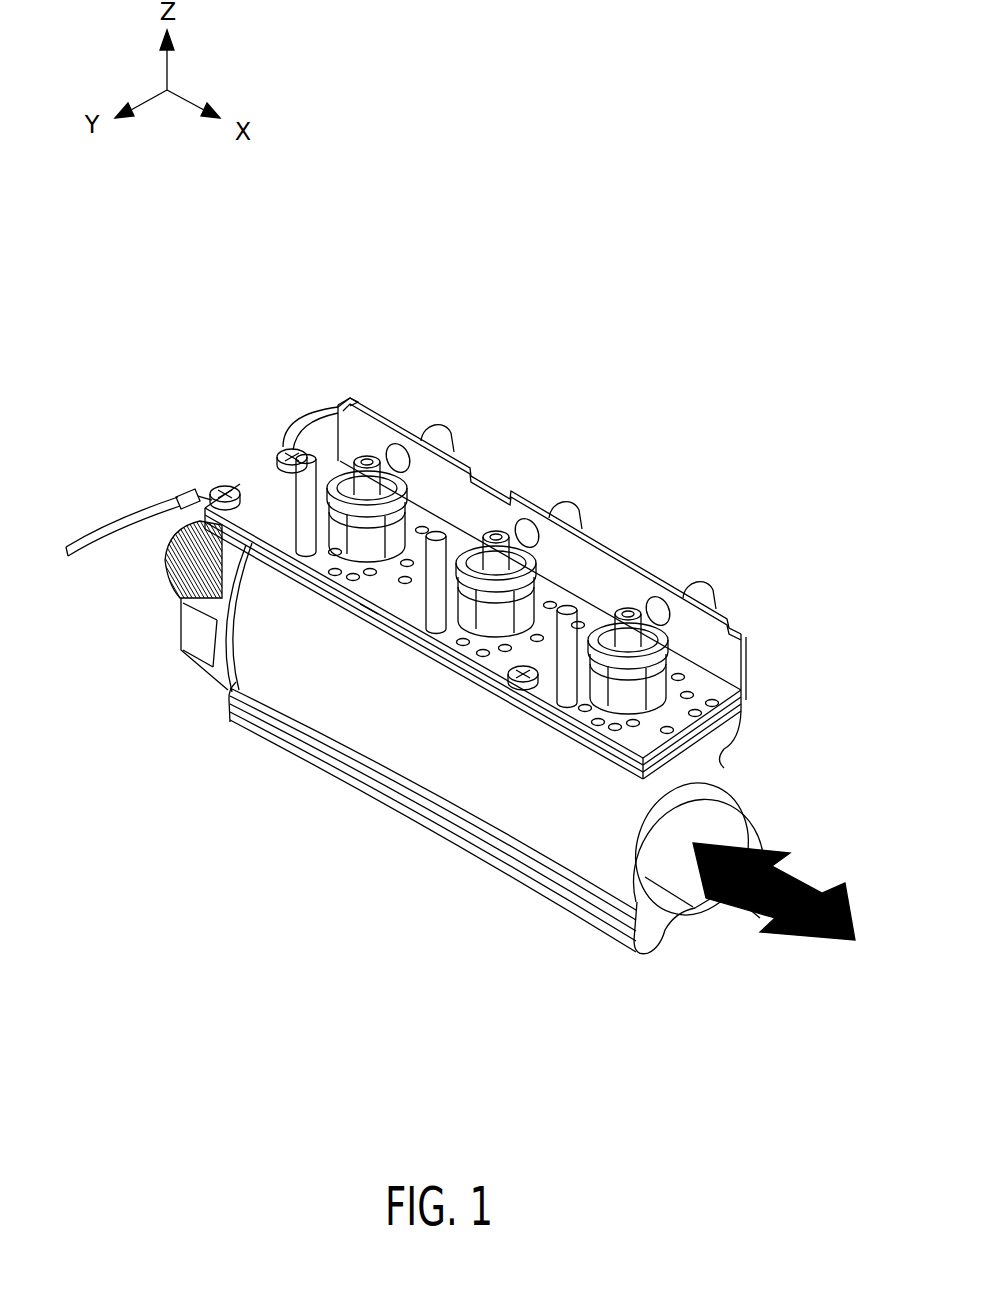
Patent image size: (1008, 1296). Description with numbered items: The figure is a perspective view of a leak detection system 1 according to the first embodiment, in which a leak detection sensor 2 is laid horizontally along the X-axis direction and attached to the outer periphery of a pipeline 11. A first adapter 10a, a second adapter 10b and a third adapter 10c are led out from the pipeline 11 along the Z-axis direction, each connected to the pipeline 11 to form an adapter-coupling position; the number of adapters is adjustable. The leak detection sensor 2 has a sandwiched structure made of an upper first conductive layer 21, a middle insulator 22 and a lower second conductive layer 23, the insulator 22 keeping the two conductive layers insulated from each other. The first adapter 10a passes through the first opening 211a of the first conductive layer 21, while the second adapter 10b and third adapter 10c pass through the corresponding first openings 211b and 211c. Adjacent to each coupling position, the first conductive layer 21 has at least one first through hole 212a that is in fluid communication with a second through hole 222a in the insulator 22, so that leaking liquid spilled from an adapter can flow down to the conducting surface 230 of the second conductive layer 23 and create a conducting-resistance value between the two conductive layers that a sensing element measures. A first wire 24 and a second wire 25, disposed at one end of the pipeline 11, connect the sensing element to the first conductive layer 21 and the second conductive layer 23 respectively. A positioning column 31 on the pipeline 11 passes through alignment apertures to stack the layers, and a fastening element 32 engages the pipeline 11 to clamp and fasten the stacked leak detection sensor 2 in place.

The leak detection system 1 is at (836, 26).
The leak detection sensor 2 is at (812, 677).
The first adapter 10a is at (362, 470).
The second adapter 10b is at (492, 550).
The third adapter 10c is at (626, 612).
The pipeline 11 is at (582, 828).
The first conductive layer 21 is at (748, 684).
The insulator 22 is at (748, 708).
The second conductive layer 23 is at (722, 724).
The first wire 24 is at (121, 527).
The second wire 25 is at (320, 415).
The positioning column 31 is at (305, 507).
The fastening element 32 is at (518, 682).
The first opening 211a is at (405, 540).
The first opening 211b is at (540, 610).
The first opening 211c is at (665, 665).
The first through hole 212a is at (240, 590).
The second through hole 222a is at (368, 624).
The conducting surface 230 is at (340, 578).